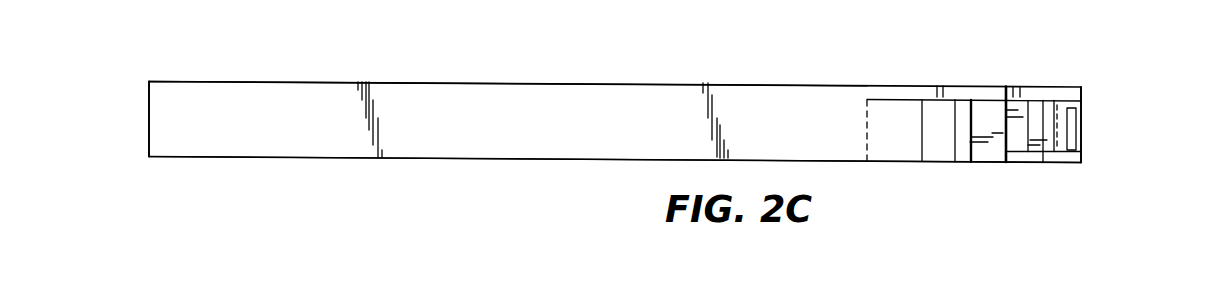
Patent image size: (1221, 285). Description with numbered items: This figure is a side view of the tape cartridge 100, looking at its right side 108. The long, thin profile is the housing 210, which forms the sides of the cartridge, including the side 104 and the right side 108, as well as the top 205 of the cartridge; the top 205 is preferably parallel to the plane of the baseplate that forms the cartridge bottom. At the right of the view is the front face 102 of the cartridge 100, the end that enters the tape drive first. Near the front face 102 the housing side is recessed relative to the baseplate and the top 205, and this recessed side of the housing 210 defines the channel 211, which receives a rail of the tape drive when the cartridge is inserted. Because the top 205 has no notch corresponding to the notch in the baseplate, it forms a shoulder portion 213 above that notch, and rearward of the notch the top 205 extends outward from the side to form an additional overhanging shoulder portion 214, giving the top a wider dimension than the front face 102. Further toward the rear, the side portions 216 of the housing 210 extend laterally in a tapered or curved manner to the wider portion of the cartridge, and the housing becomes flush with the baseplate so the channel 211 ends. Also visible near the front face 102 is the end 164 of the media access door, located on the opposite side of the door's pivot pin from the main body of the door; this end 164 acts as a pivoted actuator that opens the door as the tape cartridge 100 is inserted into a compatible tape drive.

The tape cartridge 100 is at (145, 168).
The front face 102 is at (1098, 110).
The side 104 is at (136, 101).
The right side 108 is at (530, 152).
The end of media access door 164 is at (1073, 151).
The top 205 is at (244, 66).
The housing 210 is at (624, 65).
The channel 211 is at (1099, 145).
The shoulder portion 213 is at (1040, 90).
The overhanging shoulder portion 214 is at (920, 90).
The side portions 216 is at (938, 147).